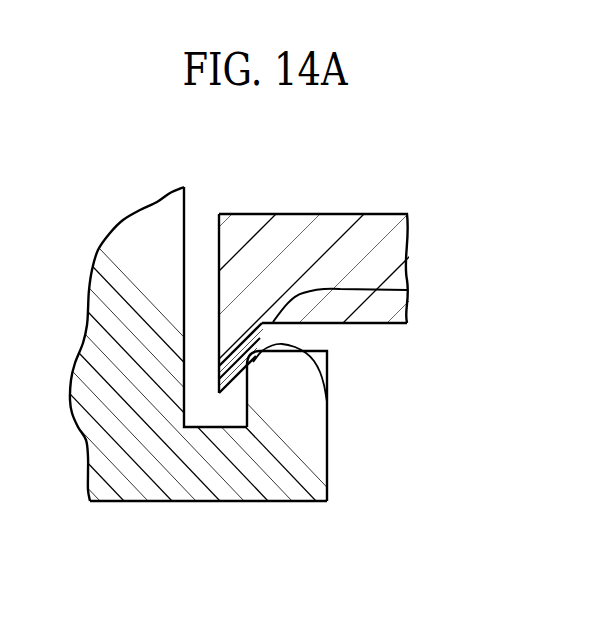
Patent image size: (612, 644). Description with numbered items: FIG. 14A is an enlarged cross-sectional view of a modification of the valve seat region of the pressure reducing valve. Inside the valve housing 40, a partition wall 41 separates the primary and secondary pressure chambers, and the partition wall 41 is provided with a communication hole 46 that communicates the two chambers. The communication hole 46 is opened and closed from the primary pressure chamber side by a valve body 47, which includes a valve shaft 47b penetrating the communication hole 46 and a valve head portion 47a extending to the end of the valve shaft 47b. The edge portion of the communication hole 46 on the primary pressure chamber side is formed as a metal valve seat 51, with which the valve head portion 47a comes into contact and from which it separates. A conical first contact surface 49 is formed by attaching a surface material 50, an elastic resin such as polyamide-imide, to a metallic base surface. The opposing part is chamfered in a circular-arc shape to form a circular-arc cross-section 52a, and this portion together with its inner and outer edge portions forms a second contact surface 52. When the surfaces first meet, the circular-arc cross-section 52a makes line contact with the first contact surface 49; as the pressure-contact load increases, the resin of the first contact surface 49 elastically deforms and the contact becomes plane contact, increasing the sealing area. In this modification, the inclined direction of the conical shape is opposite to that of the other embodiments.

The valve housing 40 is at (288, 262).
The partition wall 41 is at (335, 232).
The communication hole 46 is at (219, 238).
The valve body 47 is at (132, 503).
The valve head portion 47a is at (217, 464).
The valve shaft 47b is at (147, 230).
The first contact surface 49 is at (276, 334).
The surface material 50 is at (407, 290).
The valve seat 51 is at (380, 310).
The second contact surface 52 is at (293, 345).
The circular-arc cross-section 52a is at (254, 353).